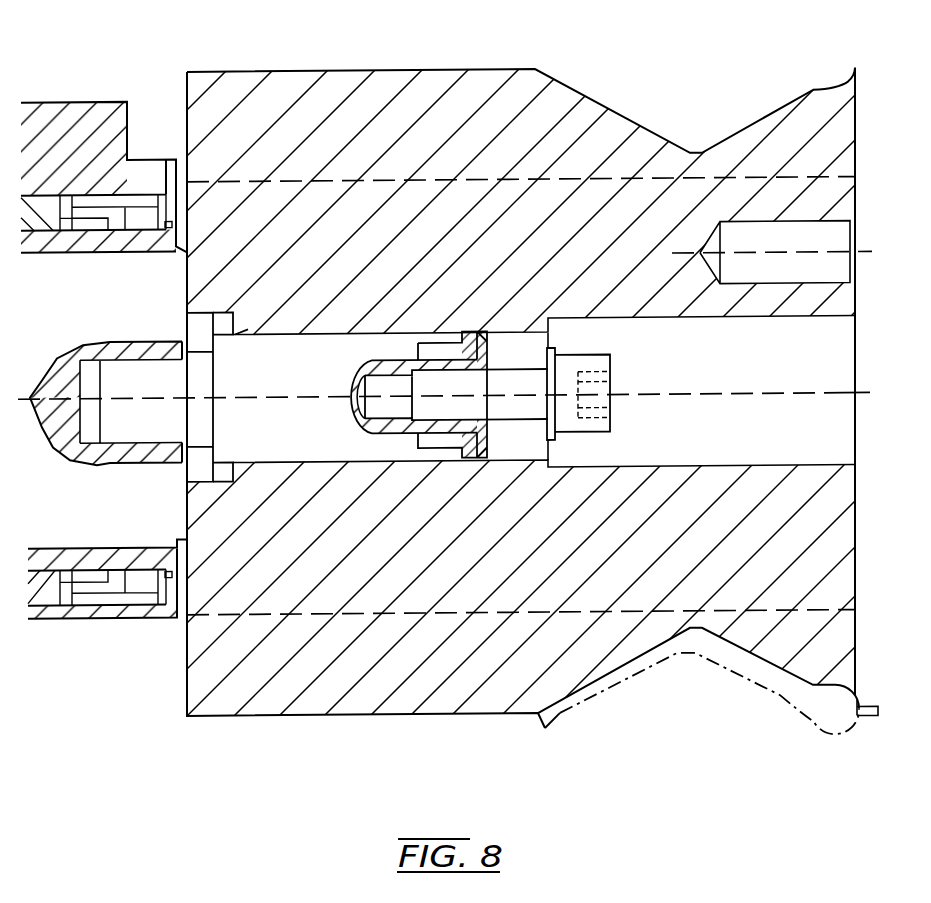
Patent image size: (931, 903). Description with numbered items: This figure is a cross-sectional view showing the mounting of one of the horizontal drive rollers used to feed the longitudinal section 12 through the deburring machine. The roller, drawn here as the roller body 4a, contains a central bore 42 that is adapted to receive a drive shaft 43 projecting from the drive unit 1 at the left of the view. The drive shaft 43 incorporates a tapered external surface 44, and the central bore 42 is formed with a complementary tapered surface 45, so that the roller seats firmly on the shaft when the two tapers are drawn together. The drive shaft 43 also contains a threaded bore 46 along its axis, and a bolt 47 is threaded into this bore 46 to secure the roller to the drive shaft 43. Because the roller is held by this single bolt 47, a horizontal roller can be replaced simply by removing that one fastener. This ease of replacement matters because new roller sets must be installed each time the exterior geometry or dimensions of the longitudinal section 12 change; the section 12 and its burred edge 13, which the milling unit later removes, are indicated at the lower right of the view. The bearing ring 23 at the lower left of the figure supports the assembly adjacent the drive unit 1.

The drive unit 1 is at (88, 125).
The body member 4a is at (378, 692).
The longitudinal section 12 is at (757, 676).
The burred edge 13 is at (867, 720).
The bearing ring 23 is at (190, 616).
The central bore 42 is at (347, 334).
The drive shaft 43 is at (277, 361).
The tapered external surface 44 is at (210, 312).
The tapered surface 45 is at (212, 312).
The threaded bore 46 is at (450, 371).
The bolt 47 is at (513, 382).